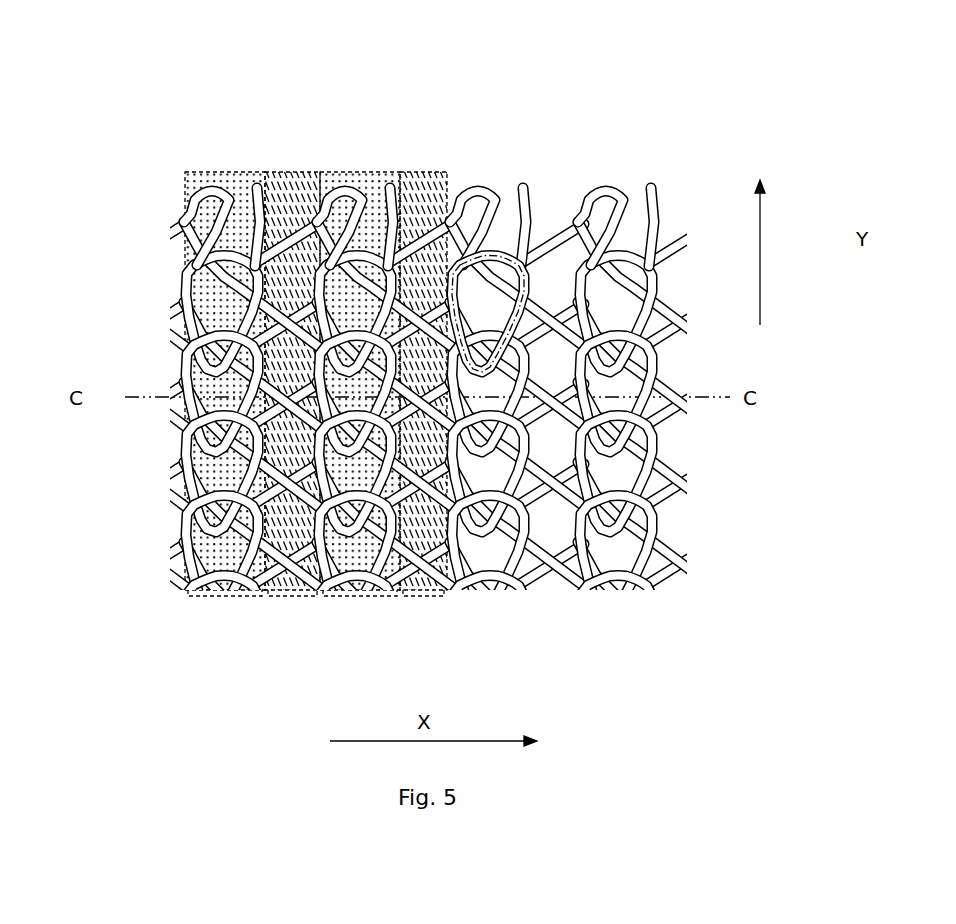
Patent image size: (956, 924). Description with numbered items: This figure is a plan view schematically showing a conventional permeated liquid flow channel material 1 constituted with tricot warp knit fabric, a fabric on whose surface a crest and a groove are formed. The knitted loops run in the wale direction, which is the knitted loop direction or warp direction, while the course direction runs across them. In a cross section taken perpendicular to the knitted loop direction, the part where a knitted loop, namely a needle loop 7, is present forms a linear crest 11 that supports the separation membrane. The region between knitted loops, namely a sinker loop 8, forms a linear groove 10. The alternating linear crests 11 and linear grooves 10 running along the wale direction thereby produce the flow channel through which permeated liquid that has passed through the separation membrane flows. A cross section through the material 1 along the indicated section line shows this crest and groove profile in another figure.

The flow channel material 1 is at (234, 170).
The needle loop 7 is at (488, 245).
The sinker loop 8 is at (424, 327).
The linear groove 10 is at (420, 596).
The linear crest 11 is at (358, 596).